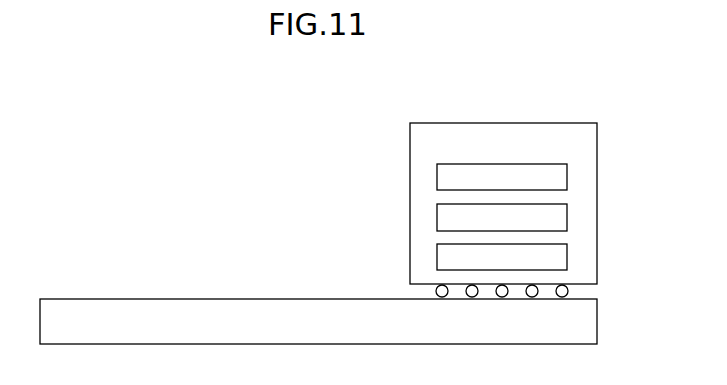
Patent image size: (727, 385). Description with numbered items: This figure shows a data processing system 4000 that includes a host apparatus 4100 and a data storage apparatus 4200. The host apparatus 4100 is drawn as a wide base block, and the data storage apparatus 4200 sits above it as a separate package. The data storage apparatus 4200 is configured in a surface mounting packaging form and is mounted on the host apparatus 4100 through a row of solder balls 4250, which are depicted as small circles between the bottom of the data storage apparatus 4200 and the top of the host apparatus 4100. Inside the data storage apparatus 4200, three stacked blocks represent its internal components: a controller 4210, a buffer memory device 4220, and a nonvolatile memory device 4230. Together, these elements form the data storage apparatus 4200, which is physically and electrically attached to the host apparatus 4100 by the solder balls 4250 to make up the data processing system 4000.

The data processing system 4000 is at (112, 97).
The host apparatus 4100 is at (318, 321).
The data storage apparatus 4200 is at (503, 203).
The controller 4210 is at (502, 177).
The buffer memory device 4220 is at (502, 217).
The nonvolatile memory device 4230 is at (502, 257).
The solder ball 4250 is at (577, 294).